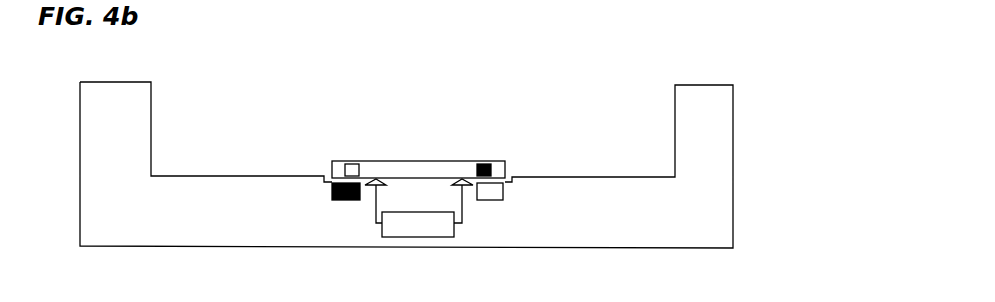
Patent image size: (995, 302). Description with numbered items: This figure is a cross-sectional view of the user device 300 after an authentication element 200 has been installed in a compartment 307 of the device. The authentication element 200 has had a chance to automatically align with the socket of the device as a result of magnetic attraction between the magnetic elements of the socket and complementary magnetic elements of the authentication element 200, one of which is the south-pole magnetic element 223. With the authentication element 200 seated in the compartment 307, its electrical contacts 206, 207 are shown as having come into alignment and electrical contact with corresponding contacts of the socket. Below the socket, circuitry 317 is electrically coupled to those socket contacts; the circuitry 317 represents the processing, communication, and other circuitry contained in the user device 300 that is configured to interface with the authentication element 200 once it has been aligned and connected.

The user device 300 is at (463, 62).
The compartment 307 is at (675, 93).
The authentication element 200 is at (498, 161).
The magnetic element 223 is at (353, 164).
The electrical contact 207 is at (383, 179).
The electrical contact 206 is at (459, 179).
The circuitry 317 is at (402, 238).